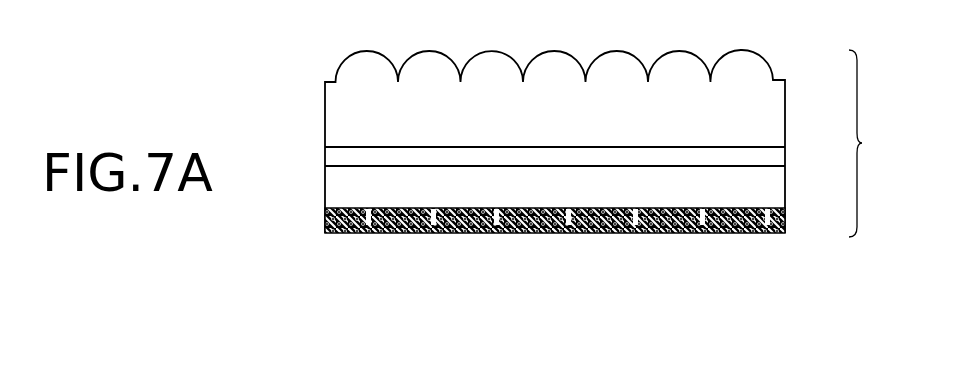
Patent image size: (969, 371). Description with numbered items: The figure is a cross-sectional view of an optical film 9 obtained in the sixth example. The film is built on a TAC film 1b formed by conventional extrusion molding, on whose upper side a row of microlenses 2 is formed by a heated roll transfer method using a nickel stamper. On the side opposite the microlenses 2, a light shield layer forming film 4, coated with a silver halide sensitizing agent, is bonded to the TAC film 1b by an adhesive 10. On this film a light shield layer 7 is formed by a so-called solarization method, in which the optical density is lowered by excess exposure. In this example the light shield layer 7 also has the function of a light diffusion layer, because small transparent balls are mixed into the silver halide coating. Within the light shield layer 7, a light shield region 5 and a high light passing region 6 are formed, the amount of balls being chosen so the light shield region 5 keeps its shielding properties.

The optical film 9 is at (866, 143).
The microlenses 2 is at (767, 60).
The TAC film 1b is at (555, 114).
The adhesive 10 is at (776, 157).
The light shield layer forming film 4 is at (776, 192).
The light shield layer 7 is at (326, 210).
The light shield region 5 is at (337, 233).
The high light passing region 6 is at (432, 233).